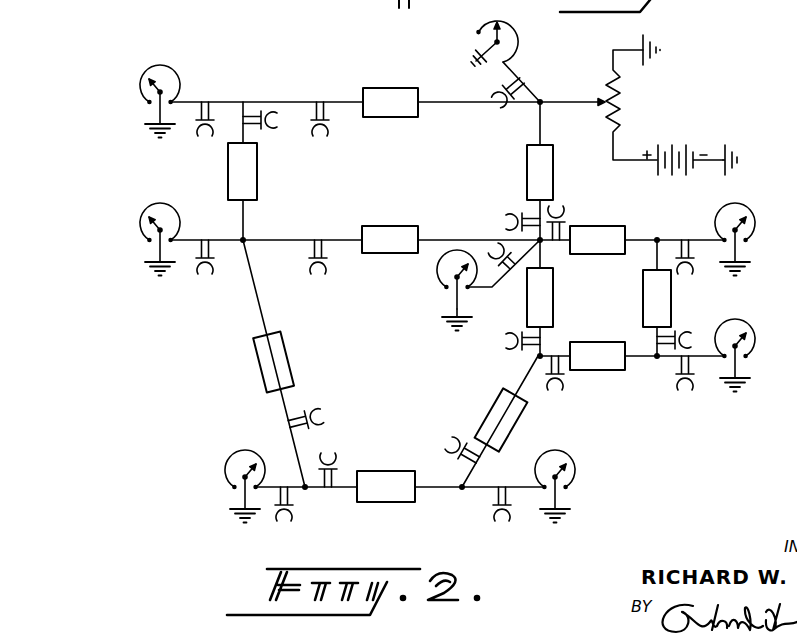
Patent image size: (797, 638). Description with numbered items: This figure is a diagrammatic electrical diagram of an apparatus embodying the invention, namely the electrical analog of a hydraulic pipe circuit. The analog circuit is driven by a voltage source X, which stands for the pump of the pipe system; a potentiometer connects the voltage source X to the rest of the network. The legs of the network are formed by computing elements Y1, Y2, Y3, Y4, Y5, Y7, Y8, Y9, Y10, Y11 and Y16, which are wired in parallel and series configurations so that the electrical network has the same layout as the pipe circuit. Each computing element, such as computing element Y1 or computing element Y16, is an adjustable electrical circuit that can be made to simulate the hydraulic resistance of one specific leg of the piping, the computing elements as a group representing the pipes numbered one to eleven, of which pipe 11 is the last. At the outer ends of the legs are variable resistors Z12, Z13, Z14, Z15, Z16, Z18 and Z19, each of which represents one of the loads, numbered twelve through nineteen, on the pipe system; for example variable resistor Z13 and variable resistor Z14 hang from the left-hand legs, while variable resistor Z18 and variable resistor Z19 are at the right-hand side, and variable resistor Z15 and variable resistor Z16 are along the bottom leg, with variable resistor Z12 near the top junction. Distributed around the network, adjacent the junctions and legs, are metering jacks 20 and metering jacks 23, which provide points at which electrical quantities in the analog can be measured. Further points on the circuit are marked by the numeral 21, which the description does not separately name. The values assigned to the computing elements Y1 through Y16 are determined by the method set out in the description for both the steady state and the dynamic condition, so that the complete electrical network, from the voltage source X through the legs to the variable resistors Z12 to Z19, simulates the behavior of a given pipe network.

The pipe 11 is at (404, 4).
The metering jack 20 is at (272, 127).
The conductor 21 is at (243, 102).
The metering jack 23 is at (212, 134).
The voltage source X is at (668, 147).
The computing element Y1 is at (385, 88).
The computing element Y2 is at (257, 170).
The computing element Y3 is at (553, 172).
The computing element Y4 is at (375, 227).
The computing element Y5 is at (295, 355).
The computing element Y7 is at (372, 471).
The computing element Y8 is at (553, 291).
The computing element Y9 is at (585, 228).
The computing element Y10 is at (670, 301).
The computing element Y11 is at (584, 342).
The computing element Y16 is at (515, 424).
The variable resistor Z12 is at (478, 32).
The variable resistor Z13 is at (144, 71).
The variable resistor Z14 is at (171, 204).
The variable resistor Z15 is at (239, 455).
The variable resistor Z16 is at (572, 460).
The variable resistor Z18 is at (742, 325).
The variable resistor Z19 is at (742, 210).